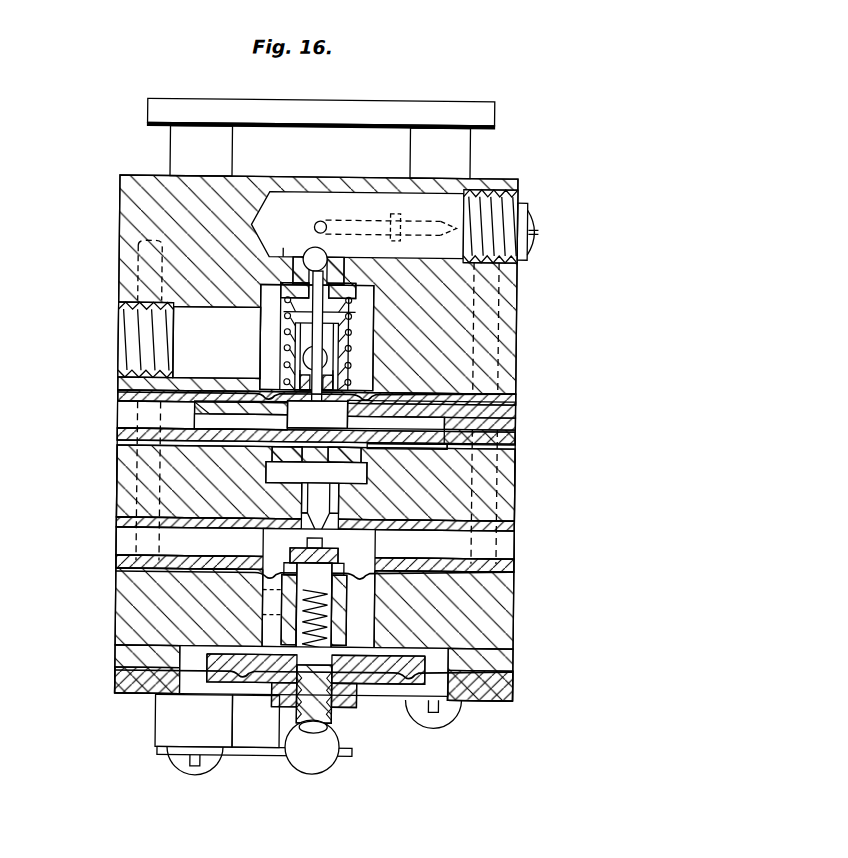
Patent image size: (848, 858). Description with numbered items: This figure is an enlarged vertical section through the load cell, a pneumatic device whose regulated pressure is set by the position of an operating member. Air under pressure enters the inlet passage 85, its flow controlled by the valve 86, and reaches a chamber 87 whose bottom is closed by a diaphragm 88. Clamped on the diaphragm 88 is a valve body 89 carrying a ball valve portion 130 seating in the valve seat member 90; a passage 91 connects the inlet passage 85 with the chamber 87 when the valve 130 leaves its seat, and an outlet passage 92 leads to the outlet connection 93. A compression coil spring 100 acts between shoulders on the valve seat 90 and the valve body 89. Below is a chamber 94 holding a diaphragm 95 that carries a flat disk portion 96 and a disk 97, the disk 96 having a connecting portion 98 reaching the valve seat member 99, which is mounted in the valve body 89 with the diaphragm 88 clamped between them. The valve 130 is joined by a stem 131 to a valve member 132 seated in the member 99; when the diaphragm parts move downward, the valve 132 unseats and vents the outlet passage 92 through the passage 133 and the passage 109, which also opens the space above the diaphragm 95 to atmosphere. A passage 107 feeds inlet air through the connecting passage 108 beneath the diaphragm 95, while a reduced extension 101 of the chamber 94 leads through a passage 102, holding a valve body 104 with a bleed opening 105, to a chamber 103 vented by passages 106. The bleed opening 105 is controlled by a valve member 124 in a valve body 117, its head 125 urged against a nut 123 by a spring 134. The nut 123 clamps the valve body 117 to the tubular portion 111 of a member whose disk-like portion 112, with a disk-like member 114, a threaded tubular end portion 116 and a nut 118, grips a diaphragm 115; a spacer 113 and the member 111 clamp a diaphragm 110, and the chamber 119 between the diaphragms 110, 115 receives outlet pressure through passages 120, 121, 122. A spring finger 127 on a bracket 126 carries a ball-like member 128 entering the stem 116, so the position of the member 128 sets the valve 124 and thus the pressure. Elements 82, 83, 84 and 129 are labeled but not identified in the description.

The body block 82 is at (131, 223).
The spacer post 83 is at (178, 133).
The cover plate 84 is at (384, 115).
The inlet passage 85 is at (471, 189).
The valve 86 is at (410, 190).
The chamber 87 is at (375, 327).
The diaphragm 88 is at (518, 385).
The valve body 89 is at (292, 310).
The valve seat member 90 is at (358, 274).
The passage 91 is at (284, 241).
The outlet passage 92 is at (162, 356).
The outlet connection 93 is at (137, 392).
The chamber 94 is at (487, 430).
The diaphragm 95 is at (462, 437).
The flat disk portion 96 is at (316, 472).
The disk 97 is at (316, 465).
The connecting portion 98 is at (357, 389).
The valve seat member 99 is at (342, 361).
The compression coil spring 100 is at (377, 299).
The reduced extension 101 is at (236, 519).
The passage 102 is at (342, 498).
The chamber 103 is at (386, 539).
The valve body 104 is at (311, 513).
The bleed opening 105 is at (294, 553).
The passages 106 is at (122, 541).
The passage 107 is at (321, 219).
The connecting passage 108 is at (522, 478).
The passage 109 is at (122, 422).
The diaphragm 110 is at (518, 581).
The tubular portion 111 is at (354, 633).
The disk-like portion 112 is at (236, 681).
The spacer 113 is at (349, 592).
The disk-like member 114 is at (406, 703).
The diaphragm 115 is at (190, 693).
The threaded tubular end portion 116 is at (338, 714).
The valve body 117 is at (334, 598).
The nut 118 is at (278, 697).
The chamber 119 is at (354, 612).
The passage 120 is at (120, 334).
The passage 121 is at (120, 501).
The passage 122 is at (120, 643).
The nut 123 is at (349, 558).
The valve member 124 is at (294, 577).
The head 125 is at (304, 589).
The bracket 126 is at (164, 733).
The spring finger 127 is at (243, 756).
The ball-like member 128 is at (342, 760).
The ball 129 is at (334, 731).
The ball valve portion 130 is at (328, 254).
The stem 131 is at (302, 336).
The valve member 132 is at (305, 360).
The passage 133 is at (318, 350).
The spring 134 is at (304, 614).